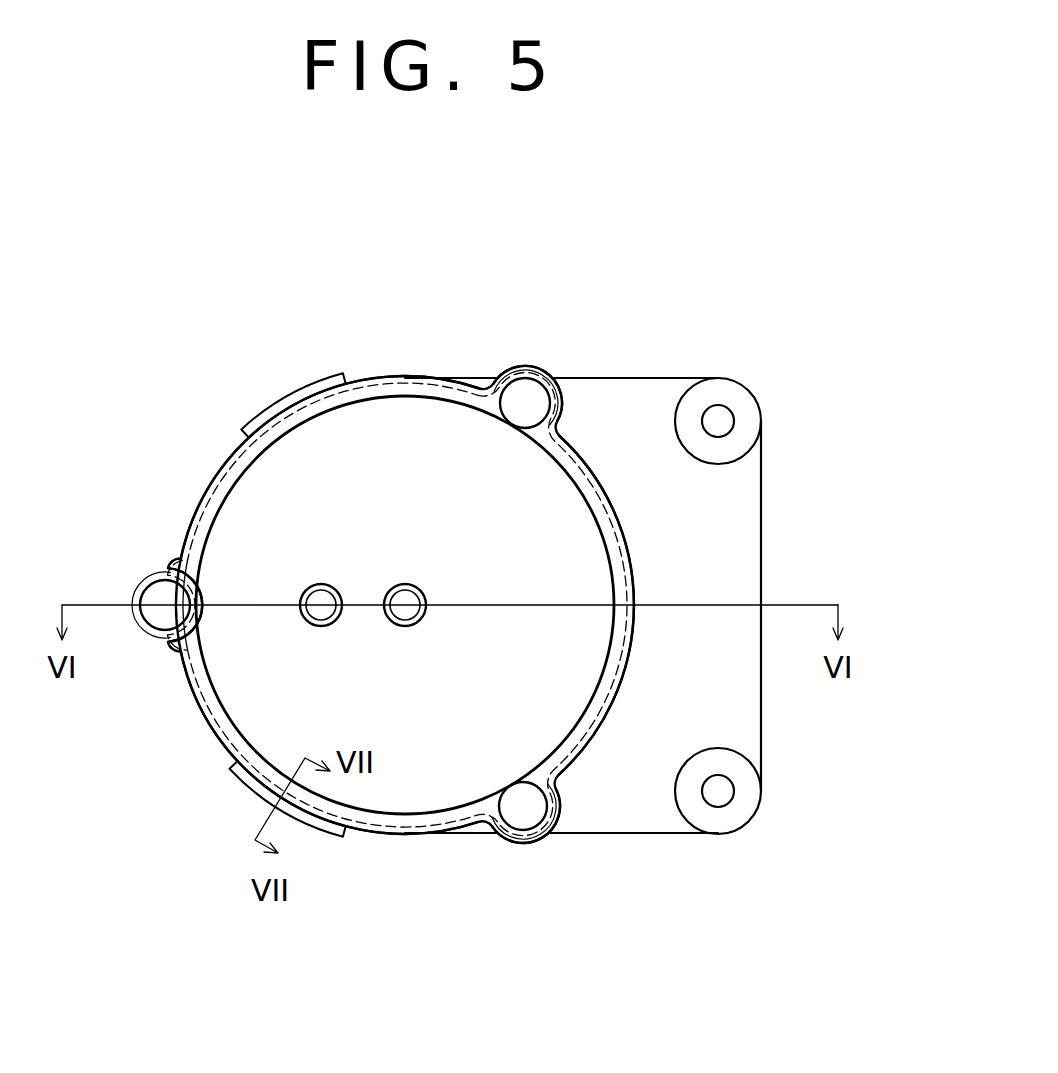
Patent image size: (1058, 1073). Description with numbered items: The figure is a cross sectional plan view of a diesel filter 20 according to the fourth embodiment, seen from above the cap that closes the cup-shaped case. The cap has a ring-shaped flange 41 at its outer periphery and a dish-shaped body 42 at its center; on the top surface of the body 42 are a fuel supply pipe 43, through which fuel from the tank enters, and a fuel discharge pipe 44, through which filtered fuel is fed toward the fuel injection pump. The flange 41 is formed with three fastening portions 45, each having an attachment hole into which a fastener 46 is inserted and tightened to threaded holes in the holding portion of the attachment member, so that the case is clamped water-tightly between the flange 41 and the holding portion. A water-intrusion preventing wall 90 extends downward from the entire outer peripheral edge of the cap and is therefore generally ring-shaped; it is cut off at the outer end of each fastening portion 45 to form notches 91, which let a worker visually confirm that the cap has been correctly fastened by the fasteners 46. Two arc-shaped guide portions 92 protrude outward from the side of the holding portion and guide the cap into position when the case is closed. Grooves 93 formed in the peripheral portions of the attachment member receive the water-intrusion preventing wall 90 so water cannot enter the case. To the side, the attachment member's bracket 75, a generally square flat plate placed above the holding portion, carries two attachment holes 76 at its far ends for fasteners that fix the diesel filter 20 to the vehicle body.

The diesel filter 20 is at (740, 374).
The ring-shaped flange 41 is at (222, 486).
The dish-shaped body 42 is at (400, 788).
The fuel supply pipe 43 is at (402, 584).
The fuel discharge pipe 44 is at (320, 584).
The fastening portion 45 is at (513, 372).
The fastener 46 is at (528, 392).
The bracket 75 is at (735, 495).
The attachment hole 76 is at (723, 421).
The water-intrusion preventing wall 90 is at (385, 378).
The notch 91 is at (545, 378).
The guide portion 92 is at (305, 380).
The groove 93 is at (262, 420).